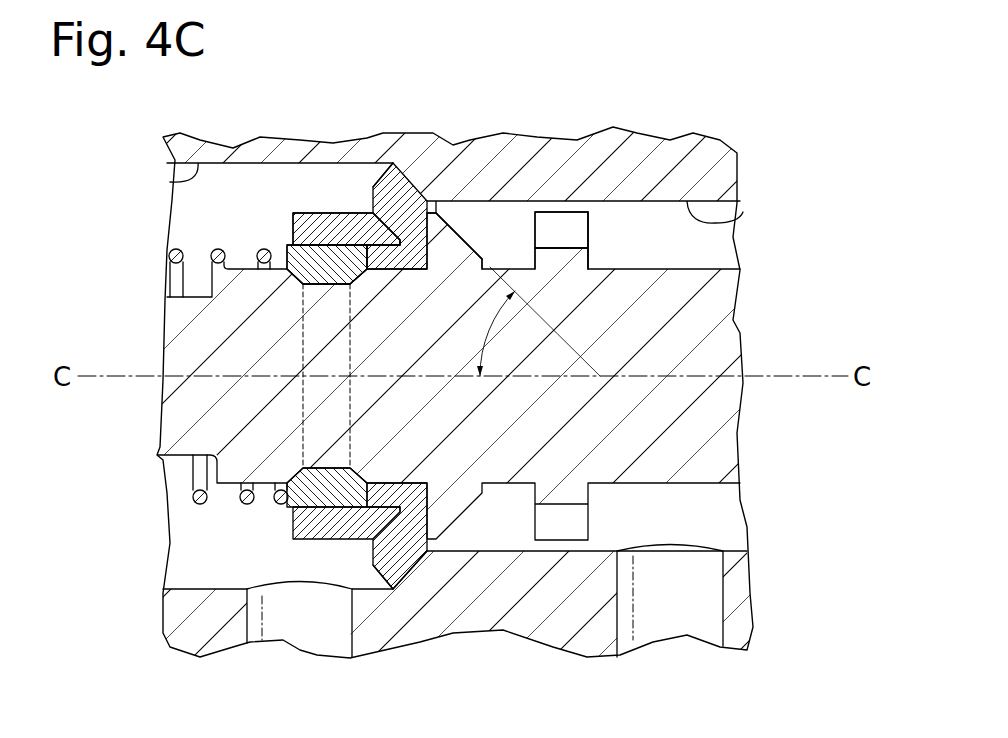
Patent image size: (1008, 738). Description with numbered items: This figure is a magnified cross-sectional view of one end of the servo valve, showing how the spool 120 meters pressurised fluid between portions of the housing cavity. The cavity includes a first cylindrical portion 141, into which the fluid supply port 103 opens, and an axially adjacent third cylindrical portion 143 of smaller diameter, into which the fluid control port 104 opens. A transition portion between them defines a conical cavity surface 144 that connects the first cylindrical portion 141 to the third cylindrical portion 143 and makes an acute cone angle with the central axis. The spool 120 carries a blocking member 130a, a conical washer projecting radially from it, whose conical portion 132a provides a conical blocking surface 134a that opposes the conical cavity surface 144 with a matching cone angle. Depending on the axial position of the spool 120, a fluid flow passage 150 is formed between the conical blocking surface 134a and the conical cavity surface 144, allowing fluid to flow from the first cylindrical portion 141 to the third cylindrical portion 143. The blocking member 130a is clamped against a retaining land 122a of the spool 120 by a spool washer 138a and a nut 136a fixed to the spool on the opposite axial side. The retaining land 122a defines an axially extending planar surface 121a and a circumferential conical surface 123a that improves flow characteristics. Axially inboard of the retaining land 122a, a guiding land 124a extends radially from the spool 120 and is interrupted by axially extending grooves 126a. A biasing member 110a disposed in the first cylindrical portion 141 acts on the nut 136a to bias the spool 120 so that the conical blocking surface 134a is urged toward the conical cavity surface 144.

The fluid supply port 103 is at (290, 622).
The fluid control port 104 is at (675, 612).
The biasing member 110a is at (203, 500).
The spool 120 is at (690, 330).
The planar surface 121a is at (452, 238).
The retaining land 122a is at (450, 240).
The conical surface 123a is at (476, 240).
The guiding land 124a is at (586, 265).
The groove 126a is at (575, 222).
The blocking member 130a is at (410, 243).
The conical portion 132a is at (392, 190).
The conical blocking surface 134a is at (504, 369).
The nut 136a is at (313, 265).
The spool washer 138a is at (307, 228).
The first cylindrical portion 141 is at (184, 182).
The third cylindrical portion 143 is at (743, 220).
The conical cavity surface 144 is at (378, 182).
The fluid flow passage 150 is at (414, 572).